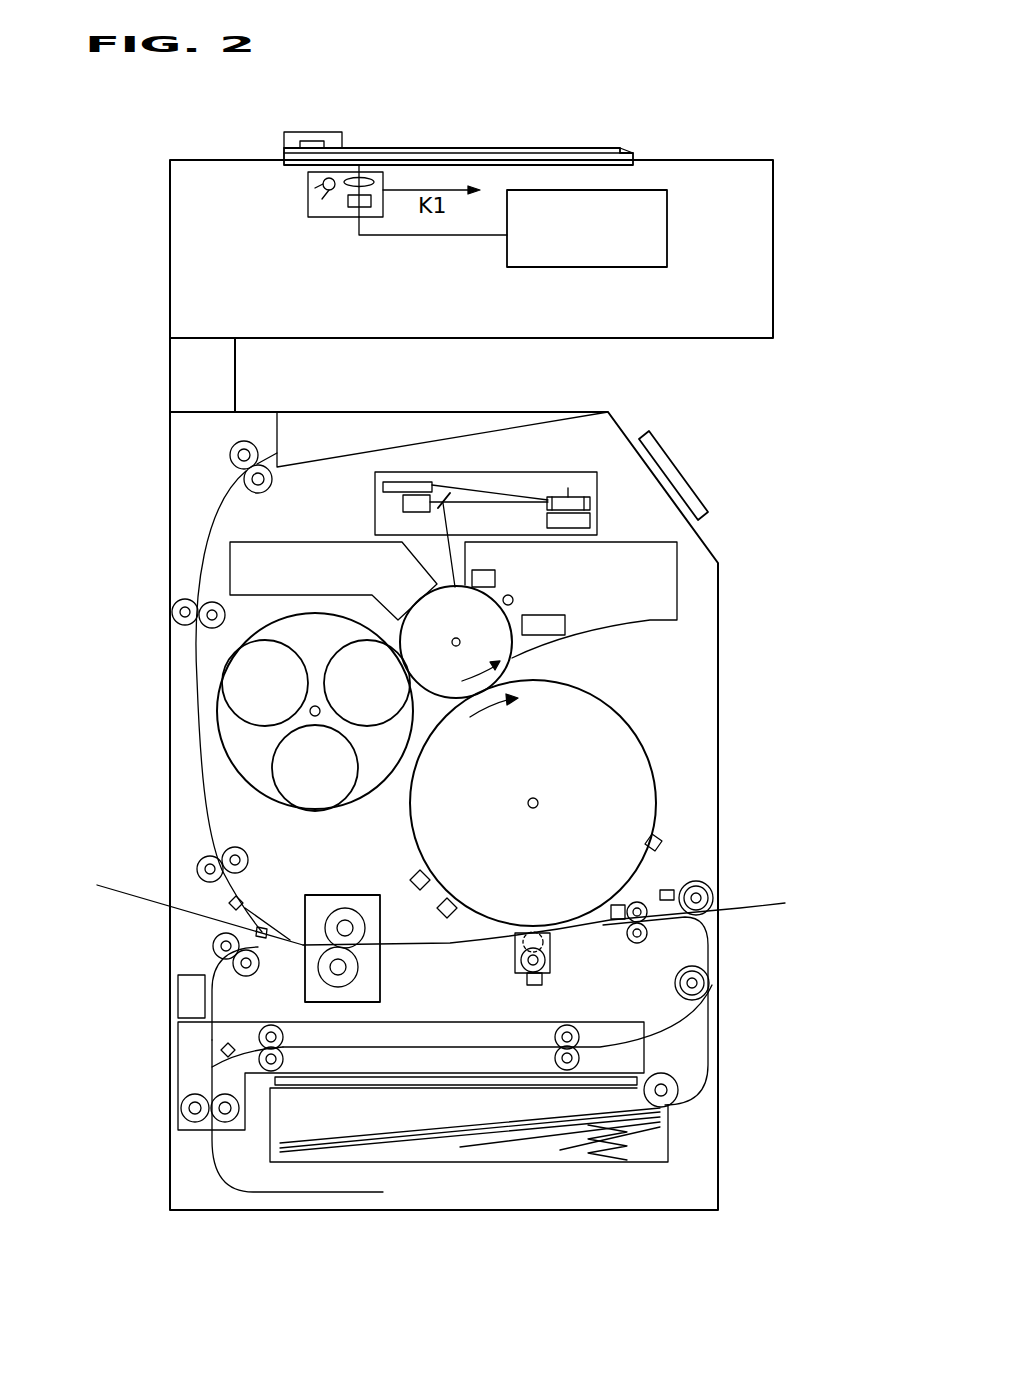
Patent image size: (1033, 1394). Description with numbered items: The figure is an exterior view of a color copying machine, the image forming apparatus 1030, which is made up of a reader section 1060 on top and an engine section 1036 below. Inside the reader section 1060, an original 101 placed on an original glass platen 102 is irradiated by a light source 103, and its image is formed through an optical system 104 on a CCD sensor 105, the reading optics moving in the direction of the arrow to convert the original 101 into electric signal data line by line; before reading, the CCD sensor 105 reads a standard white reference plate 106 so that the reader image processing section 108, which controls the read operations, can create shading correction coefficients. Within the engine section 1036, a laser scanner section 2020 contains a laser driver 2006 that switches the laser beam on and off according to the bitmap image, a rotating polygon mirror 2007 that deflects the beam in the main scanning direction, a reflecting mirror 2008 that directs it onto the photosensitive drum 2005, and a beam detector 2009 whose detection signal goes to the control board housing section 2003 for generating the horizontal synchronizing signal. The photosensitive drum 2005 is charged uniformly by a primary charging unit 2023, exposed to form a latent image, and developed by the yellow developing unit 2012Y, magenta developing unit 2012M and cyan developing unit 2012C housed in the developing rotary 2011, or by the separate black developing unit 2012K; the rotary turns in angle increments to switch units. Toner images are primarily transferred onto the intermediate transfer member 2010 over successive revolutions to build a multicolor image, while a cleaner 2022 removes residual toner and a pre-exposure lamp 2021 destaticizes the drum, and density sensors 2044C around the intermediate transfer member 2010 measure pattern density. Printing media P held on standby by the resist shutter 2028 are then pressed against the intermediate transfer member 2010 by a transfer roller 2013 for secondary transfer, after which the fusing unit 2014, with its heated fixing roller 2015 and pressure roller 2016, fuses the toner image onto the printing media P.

The image forming apparatus 1030 is at (822, 56).
The reader section 1060 is at (752, 160).
The original 101 is at (558, 148).
The original glass platen 102 is at (630, 150).
The light source 103 is at (322, 184).
The optical system 104 is at (346, 186).
The CCD sensor 105 is at (356, 208).
The standard white reference plate 106 is at (301, 146).
The reader image processing section 108 is at (667, 214).
The engine section 1036 is at (450, 412).
The black developing unit 2012K is at (262, 542).
The laser scanner section 2020 is at (597, 522).
The laser driver 2006 is at (383, 487).
The beam detector 2009 is at (403, 505).
The rotating polygon mirror 2007 is at (572, 497).
The reflecting mirror 2008 is at (402, 542).
The photosensitive drum 2005 is at (512, 668).
The primary charging unit 2023 is at (494, 577).
The pre-exposure lamp 2021 is at (513, 600).
The cleaner 2022 is at (566, 624).
The developing rotary 2011 is at (372, 793).
The yellow developing unit 2012Y is at (330, 660).
The magenta developing unit 2012M is at (228, 712).
The cyan developing unit 2012C is at (288, 780).
The intermediate transfer member 2010 is at (642, 731).
The density sensors 2044C is at (475, 891).
The resist shutter 2028 is at (668, 890).
The fusing unit 2014 is at (305, 895).
The fixing roller 2015 is at (362, 910).
The pressure roller 2016 is at (381, 972).
The transfer roller 2013 is at (550, 965).
The control board housing section 2003 is at (469, 1119).
The printing media P is at (300, 1142).